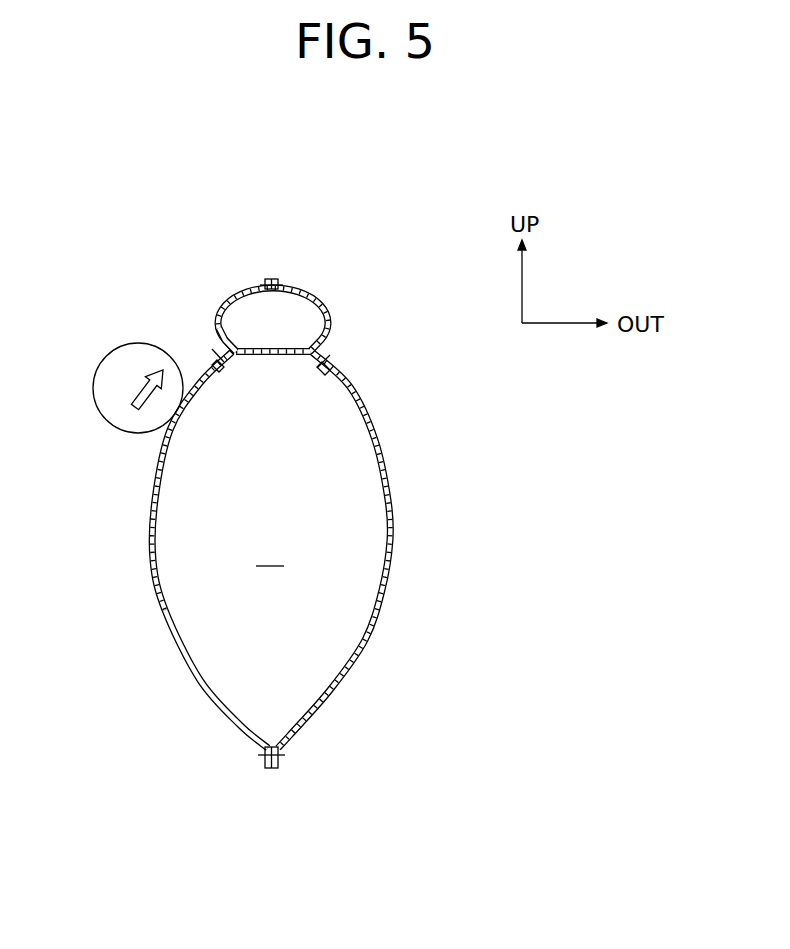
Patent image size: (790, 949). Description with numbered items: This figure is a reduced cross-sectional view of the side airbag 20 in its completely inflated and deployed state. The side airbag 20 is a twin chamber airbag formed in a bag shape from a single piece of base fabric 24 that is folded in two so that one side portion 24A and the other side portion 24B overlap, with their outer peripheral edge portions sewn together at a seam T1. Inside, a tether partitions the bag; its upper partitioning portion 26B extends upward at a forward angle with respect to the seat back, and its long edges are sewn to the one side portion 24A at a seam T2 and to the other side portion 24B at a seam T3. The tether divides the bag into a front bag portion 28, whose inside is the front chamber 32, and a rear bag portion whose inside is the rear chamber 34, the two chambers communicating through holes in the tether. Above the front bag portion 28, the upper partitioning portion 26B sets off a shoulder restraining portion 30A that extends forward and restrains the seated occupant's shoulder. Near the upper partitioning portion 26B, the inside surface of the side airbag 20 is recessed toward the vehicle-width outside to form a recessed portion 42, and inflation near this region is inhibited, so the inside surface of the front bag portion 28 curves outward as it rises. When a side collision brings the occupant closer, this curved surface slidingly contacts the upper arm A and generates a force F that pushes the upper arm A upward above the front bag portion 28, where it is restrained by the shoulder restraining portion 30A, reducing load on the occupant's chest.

The side airbag 20 is at (269, 550).
The base fabric 24 is at (269, 550).
The one side portion 24A is at (172, 625).
The other side portion 24B is at (365, 640).
The upper partitioning portion 26B is at (265, 356).
The front bag portion 28 is at (153, 560).
The shoulder restraining portion 30A is at (330, 321).
The front chamber 32 is at (270, 552).
The rear chamber 34 is at (298, 305).
The recessed portion 42 is at (213, 337).
The seam T1 is at (268, 283).
The seam T2 is at (223, 370).
The seam T3 is at (332, 357).
The upper arm A is at (113, 348).
The force F is at (136, 389).